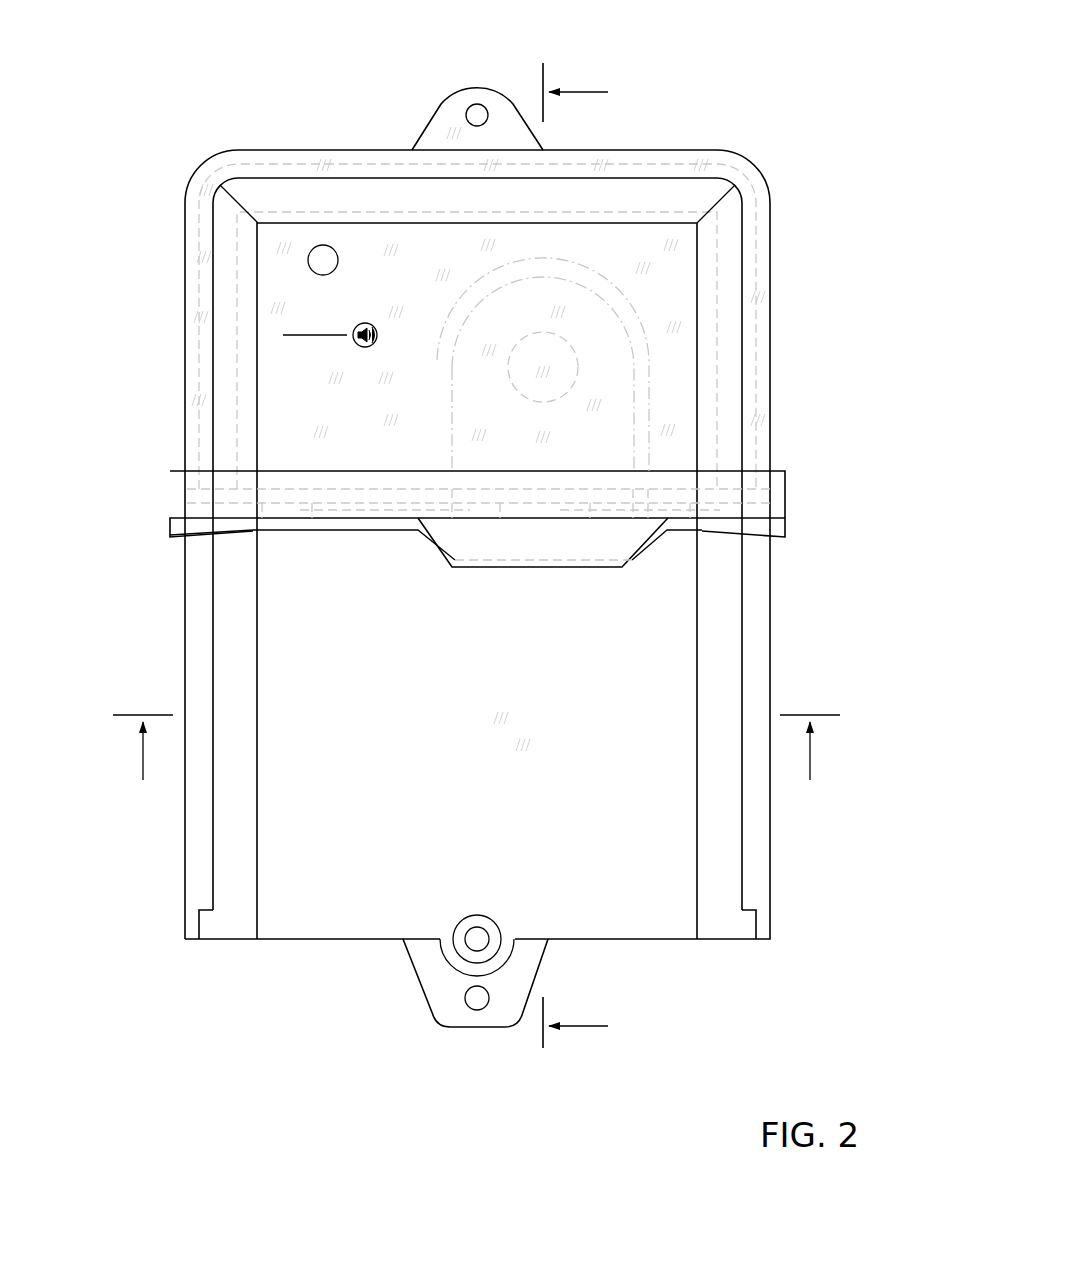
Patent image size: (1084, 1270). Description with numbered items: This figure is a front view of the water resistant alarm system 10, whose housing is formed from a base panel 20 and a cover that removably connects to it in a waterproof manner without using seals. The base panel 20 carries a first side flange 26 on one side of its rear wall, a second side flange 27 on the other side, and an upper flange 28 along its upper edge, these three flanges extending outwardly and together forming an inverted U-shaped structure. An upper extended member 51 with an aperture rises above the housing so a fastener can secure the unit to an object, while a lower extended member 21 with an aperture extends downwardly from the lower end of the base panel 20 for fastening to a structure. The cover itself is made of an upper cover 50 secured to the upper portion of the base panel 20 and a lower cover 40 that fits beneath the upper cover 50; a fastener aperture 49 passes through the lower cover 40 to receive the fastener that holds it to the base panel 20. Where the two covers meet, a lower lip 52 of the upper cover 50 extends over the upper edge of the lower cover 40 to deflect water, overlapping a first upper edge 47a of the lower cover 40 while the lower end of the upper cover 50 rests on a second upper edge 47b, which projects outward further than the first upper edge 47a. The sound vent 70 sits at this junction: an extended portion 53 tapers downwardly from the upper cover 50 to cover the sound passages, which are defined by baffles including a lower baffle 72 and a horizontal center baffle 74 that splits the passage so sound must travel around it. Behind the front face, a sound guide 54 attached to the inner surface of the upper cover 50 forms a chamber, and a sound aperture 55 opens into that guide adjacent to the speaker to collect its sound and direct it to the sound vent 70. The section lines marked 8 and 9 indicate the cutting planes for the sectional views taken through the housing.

The water resistant alarm system 10 is at (192, 101).
The base panel 20 is at (196, 281).
The lower extended member 21 is at (432, 1018).
The first side flange 26 is at (198, 343).
The second side flange 27 is at (772, 243).
The upper flange 28 is at (677, 150).
The lower cover 40 is at (312, 944).
The first upper edge 47a is at (170, 500).
The second upper edge 47b is at (320, 532).
The fastener aperture 49 is at (467, 942).
The upper cover 50 is at (352, 146).
The upper extended member 51 is at (477, 90).
The lower lip 52 is at (786, 490).
The extended portion 53 is at (542, 567).
The sound guide 54 is at (647, 387).
The sound aperture 55 is at (572, 348).
The sound vent 70 is at (497, 569).
The lower baffle 72 is at (482, 560).
The center baffle 74 is at (600, 538).
The section line 8- 8 is at (476, 766).
The section line 9- 9 is at (590, 555).